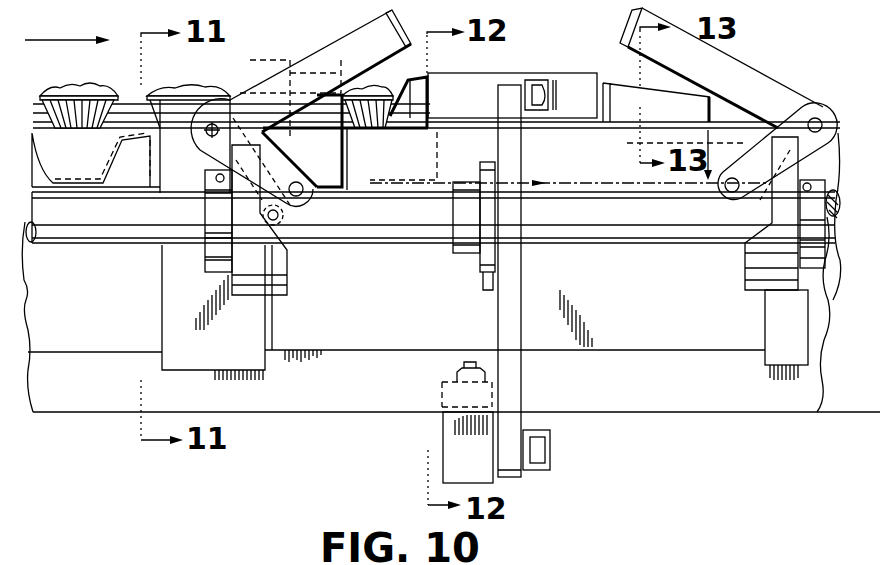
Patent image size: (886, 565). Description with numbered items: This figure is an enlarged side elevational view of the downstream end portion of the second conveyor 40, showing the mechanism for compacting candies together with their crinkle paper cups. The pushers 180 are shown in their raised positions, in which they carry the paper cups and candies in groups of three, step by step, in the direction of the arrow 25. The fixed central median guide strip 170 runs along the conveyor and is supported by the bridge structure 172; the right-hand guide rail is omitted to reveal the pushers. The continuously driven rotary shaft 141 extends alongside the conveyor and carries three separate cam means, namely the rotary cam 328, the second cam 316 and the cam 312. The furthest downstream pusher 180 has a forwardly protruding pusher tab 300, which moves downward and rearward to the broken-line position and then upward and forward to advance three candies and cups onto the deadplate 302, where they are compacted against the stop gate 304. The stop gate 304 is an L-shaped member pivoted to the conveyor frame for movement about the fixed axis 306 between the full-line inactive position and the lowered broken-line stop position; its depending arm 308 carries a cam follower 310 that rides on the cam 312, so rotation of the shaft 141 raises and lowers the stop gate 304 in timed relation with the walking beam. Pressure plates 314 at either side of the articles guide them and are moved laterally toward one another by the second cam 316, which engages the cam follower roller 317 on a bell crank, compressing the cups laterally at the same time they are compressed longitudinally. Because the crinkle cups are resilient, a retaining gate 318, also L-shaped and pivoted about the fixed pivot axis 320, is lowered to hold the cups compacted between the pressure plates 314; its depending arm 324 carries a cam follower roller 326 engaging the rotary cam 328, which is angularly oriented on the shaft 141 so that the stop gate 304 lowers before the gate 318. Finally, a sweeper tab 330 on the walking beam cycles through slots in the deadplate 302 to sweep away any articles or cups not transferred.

The arrow 25 is at (72, 38).
The second conveyor 40 is at (66, 165).
The rotary shaft 141 is at (74, 223).
The central median guide strip 170 is at (132, 98).
The bridge structure 172 is at (300, 62).
The pusher 180 is at (147, 115).
The pusher tab 300 is at (408, 78).
The deadplate 302 is at (490, 116).
The stop gate 304 is at (627, 48).
The fixed axis 306 is at (830, 108).
The depending arm 308 is at (723, 195).
The cam follower 310 is at (747, 237).
The cam 312 is at (747, 263).
The pressure plate 314 is at (588, 104).
The second cam 316 is at (458, 254).
The cam follower roller 317 is at (482, 282).
The gate 318 is at (342, 37).
The fixed pivot axis 320 is at (207, 138).
The depending arm 324 is at (268, 160).
The cam follower roller 326 is at (290, 215).
The rotary cam 328 is at (288, 272).
The sweeper tab 330 is at (712, 105).